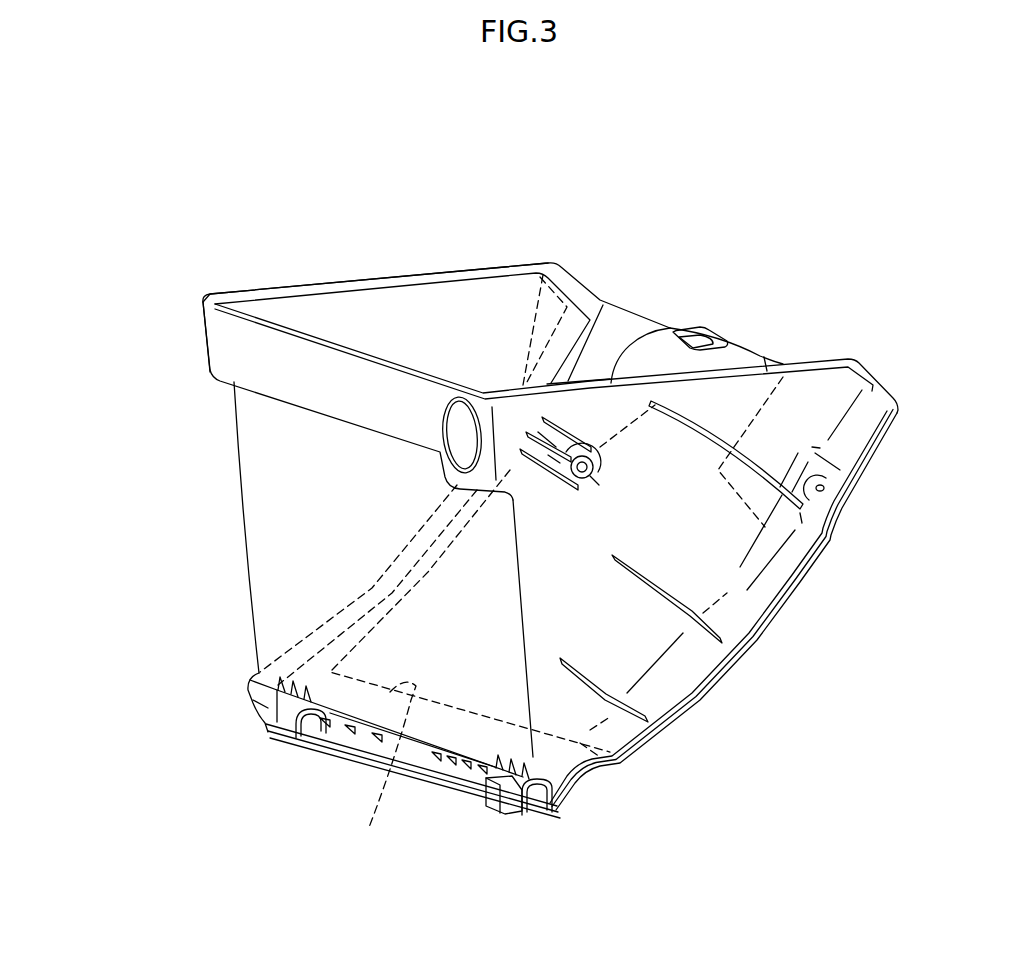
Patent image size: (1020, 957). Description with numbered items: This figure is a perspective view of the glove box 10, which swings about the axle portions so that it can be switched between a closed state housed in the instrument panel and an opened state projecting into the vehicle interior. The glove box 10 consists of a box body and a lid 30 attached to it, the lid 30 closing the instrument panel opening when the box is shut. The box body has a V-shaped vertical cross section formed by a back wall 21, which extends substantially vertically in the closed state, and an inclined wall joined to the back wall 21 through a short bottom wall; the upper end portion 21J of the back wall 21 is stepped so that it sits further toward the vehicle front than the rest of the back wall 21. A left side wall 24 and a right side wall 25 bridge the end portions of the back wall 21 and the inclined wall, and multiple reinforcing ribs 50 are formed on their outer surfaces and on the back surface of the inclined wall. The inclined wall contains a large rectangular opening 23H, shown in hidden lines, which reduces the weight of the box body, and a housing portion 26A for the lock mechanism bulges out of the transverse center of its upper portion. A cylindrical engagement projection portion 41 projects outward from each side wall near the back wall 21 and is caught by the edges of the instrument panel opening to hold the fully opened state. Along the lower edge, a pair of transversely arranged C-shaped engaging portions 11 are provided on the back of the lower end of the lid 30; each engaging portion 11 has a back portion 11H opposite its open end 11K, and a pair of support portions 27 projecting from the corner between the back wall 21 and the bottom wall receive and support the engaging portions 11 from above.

The glove box 10 is at (660, 233).
The right side wall 25 is at (403, 320).
The upper end portion of the back wall 21J is at (273, 363).
The housing portion 26A is at (712, 328).
The back wall 21 is at (280, 475).
The engagement projection portion 41 is at (613, 487).
The reinforcing rib 50 is at (777, 493).
The lid 30 is at (763, 637).
The left side wall 24 is at (617, 633).
The engaging portion 11 is at (277, 747).
The back portion of the engaging portion 11H is at (250, 698).
The support portion 27 is at (267, 718).
The open end of the engaging portion 11K is at (312, 743).
The opening 23H is at (380, 772).